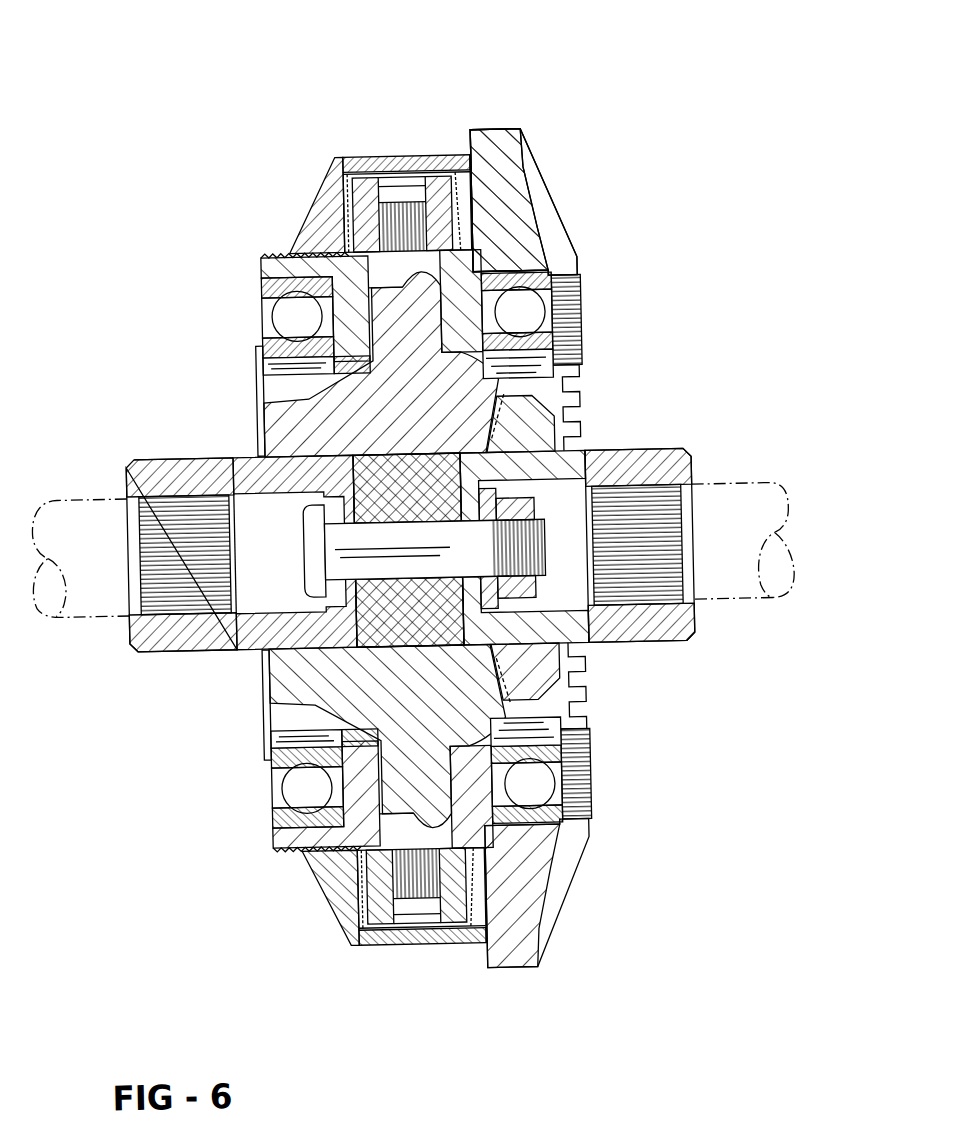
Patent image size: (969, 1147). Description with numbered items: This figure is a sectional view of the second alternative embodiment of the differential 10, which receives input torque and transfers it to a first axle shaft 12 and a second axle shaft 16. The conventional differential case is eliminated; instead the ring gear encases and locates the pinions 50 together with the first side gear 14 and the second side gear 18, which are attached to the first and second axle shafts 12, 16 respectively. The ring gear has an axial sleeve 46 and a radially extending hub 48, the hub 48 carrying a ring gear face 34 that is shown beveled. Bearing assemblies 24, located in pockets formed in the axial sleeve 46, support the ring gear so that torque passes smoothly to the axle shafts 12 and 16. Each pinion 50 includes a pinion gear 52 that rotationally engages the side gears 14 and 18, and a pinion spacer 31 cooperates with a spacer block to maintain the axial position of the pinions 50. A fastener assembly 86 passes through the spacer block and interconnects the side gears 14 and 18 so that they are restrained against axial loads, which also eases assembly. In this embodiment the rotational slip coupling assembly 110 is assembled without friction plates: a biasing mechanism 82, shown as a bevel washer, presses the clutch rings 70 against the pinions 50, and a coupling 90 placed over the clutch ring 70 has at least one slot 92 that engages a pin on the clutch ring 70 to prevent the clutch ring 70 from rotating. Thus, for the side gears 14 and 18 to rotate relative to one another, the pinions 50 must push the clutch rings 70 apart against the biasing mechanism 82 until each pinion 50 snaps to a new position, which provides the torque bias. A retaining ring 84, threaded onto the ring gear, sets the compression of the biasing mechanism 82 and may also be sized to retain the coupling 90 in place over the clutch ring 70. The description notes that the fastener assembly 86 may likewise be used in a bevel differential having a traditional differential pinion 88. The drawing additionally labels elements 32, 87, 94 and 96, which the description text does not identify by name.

The differential 10 is at (382, 68).
The first axle shaft 12 is at (741, 499).
The first side gear 14 is at (652, 460).
The second axle shaft 16 is at (74, 517).
The second side gear 18 is at (139, 454).
The bearing assemblies 24 is at (530, 324).
The pinion spacer 31 is at (345, 354).
The lower flange 32 is at (504, 959).
The ring gear face 34 is at (571, 258).
The axial sleeve 46 is at (276, 272).
The radially extending hub 48 is at (542, 218).
The pinions 50 is at (366, 391).
The pinion gear 52 is at (334, 379).
The clutch rings 70 is at (366, 173).
The biasing mechanism 82 is at (340, 155).
The retaining ring 84 is at (318, 883).
The fastener assembly 86 is at (256, 637).
The center bolt 87 is at (545, 568).
The traditional differential pinion 88 is at (530, 594).
The coupling 90 is at (427, 939).
The slot 92 is at (466, 160).
The washer plate 94 is at (263, 449).
The spacer ring 96 is at (581, 454).
The rotational slip coupling assembly 110 is at (409, 148).